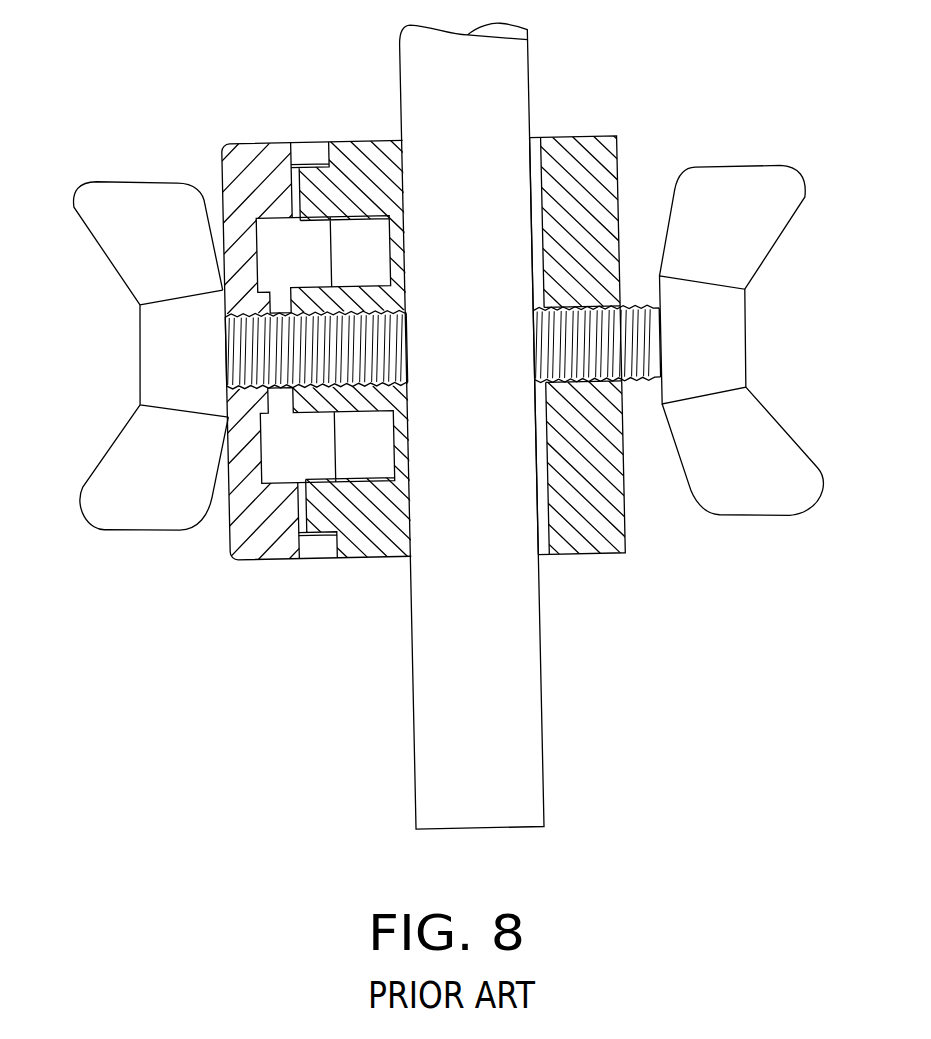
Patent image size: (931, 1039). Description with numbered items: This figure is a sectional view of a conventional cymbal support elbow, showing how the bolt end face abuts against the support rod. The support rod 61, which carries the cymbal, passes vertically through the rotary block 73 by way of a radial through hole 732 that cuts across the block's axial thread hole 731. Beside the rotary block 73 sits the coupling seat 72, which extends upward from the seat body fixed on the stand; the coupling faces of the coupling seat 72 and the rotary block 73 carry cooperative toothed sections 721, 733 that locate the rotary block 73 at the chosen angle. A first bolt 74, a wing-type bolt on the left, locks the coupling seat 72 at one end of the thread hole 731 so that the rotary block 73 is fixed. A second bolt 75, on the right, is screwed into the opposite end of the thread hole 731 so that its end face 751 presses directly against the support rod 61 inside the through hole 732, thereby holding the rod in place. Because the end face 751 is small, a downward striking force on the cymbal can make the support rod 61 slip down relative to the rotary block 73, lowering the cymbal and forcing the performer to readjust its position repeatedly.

The support rod 61 is at (523, 641).
The coupling seat 72 is at (250, 142).
The toothed section 721 is at (290, 203).
The axial thread hole 731 is at (405, 325).
The radial through hole 732 is at (531, 143).
The toothed section 733 is at (300, 202).
The rotary block 73 is at (590, 170).
The end face 751 is at (536, 326).
The first bolt 74 is at (155, 347).
The second bolt 75 is at (672, 380).